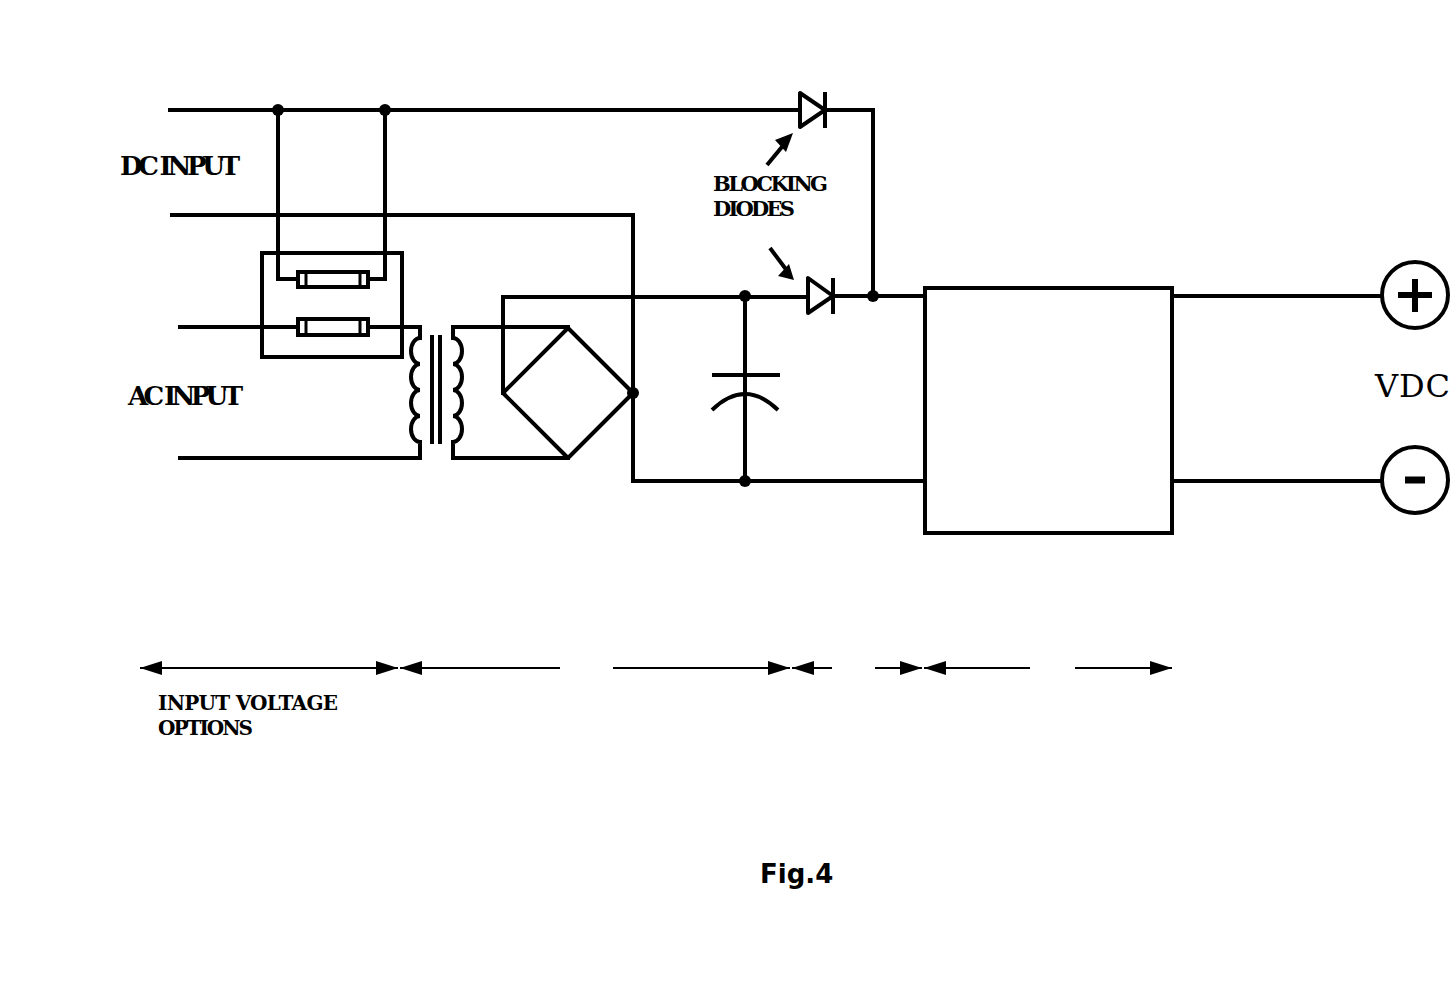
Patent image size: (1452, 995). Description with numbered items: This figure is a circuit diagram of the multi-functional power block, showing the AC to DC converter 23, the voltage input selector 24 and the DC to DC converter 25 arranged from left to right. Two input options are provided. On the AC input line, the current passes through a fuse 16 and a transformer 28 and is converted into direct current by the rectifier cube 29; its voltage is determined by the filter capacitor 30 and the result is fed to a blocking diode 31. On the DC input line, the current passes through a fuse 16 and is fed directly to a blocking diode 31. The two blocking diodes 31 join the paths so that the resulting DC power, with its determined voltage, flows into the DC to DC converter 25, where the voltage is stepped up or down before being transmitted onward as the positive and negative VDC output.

The fuse 16 is at (300, 305).
The AC to DC converter 23 is at (566, 489).
The voltage input selector 24 is at (817, 399).
The DC to DC converter 25 is at (1070, 680).
The transformer 28 is at (434, 335).
The rectifier cube 29 is at (600, 436).
The filter capacitor 30 is at (752, 397).
The blocking diode 31 is at (805, 92).